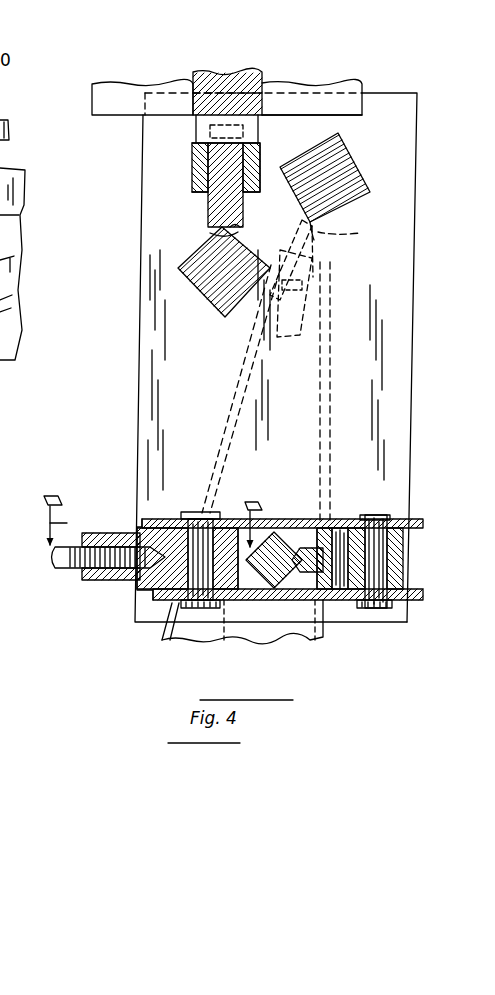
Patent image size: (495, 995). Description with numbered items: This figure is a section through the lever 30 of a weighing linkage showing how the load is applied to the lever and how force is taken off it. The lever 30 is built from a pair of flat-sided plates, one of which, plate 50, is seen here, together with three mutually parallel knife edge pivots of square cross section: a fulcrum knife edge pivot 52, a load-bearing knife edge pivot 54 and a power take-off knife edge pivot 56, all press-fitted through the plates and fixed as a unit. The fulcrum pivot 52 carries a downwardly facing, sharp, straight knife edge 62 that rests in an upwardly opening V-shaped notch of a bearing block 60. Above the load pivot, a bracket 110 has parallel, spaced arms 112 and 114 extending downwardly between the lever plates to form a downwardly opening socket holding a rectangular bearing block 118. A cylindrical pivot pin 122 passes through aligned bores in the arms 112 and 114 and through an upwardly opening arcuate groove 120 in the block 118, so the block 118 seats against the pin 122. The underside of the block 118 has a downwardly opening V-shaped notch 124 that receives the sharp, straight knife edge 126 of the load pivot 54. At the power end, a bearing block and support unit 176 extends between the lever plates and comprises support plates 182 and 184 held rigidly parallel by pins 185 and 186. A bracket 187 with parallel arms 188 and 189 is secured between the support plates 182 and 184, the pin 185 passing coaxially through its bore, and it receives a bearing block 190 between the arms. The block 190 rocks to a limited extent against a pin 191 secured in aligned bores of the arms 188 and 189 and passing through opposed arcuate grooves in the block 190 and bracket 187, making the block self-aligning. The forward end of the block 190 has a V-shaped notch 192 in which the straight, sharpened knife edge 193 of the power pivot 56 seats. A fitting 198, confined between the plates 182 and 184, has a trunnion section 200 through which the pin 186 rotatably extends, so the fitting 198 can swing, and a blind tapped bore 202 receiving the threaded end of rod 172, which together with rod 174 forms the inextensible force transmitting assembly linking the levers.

The lever 30 is at (136, 378).
The flat-sided plate 50 is at (417, 125).
The fulcrum knife edge pivot 52 is at (355, 157).
The load-bearing knife edge pivot 54 is at (205, 297).
The power take-off knife edge pivot 56 is at (226, 605).
The bearing block 60 is at (349, 247).
The knife edge 62 is at (314, 240).
The bracket 110 is at (192, 80).
The arm 112 is at (192, 165).
The arm 114 is at (260, 158).
The bearing block 118 is at (208, 215).
The arcuate groove 120 is at (232, 135).
The pivot pin 122 is at (222, 130).
The V-shaped notch 124 is at (222, 250).
The knife edge 126 is at (238, 224).
The rod 172 is at (72, 568).
The rod 174 is at (0, 153).
The bearing block and support unit 176 is at (425, 523).
The support plate 182 is at (340, 540).
The support plate 184 is at (418, 605).
The pin 185 is at (390, 556).
The pin 186 is at (240, 519).
The bracket 187 is at (405, 565).
The arm 188 is at (334, 519).
The arm 189 is at (325, 600).
The bearing block 190 is at (310, 590).
The pin 191 is at (378, 525).
The V-shaped notch 192 is at (272, 590).
The knife edge 193 is at (296, 530).
The fitting 198 is at (115, 526).
The trunnion section 200 is at (168, 519).
The blind tapped bore 202 is at (110, 581).